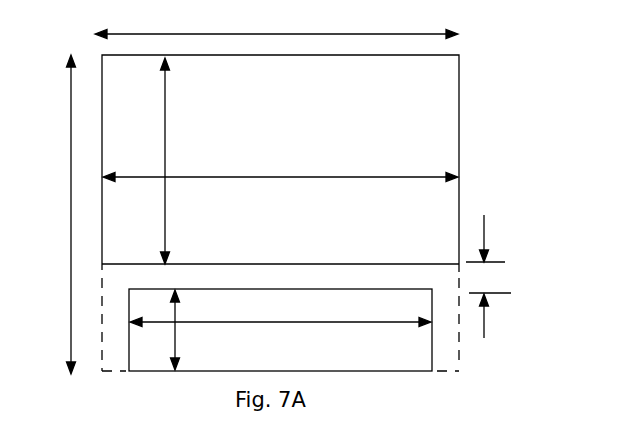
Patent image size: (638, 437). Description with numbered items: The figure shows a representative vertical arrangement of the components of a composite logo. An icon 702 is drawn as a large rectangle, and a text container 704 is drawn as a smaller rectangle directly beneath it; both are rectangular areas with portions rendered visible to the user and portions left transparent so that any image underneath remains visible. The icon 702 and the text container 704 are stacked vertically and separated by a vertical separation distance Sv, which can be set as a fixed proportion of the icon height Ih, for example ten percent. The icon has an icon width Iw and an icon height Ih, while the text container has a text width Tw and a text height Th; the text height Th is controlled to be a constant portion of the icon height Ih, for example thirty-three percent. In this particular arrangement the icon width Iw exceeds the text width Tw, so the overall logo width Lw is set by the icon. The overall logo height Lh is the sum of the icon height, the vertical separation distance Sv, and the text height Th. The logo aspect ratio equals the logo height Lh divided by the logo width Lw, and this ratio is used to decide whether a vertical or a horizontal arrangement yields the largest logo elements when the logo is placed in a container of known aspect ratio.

The icon 702 is at (430, 116).
The text container 704 is at (338, 358).
The logo width Lw is at (276, 22).
The logo height Lh is at (50, 214).
The icon width Iw is at (280, 164).
The icon height Ih is at (178, 161).
The text width Tw is at (280, 311).
The text height Th is at (188, 330).
The vertical separation distance Sv is at (488, 276).